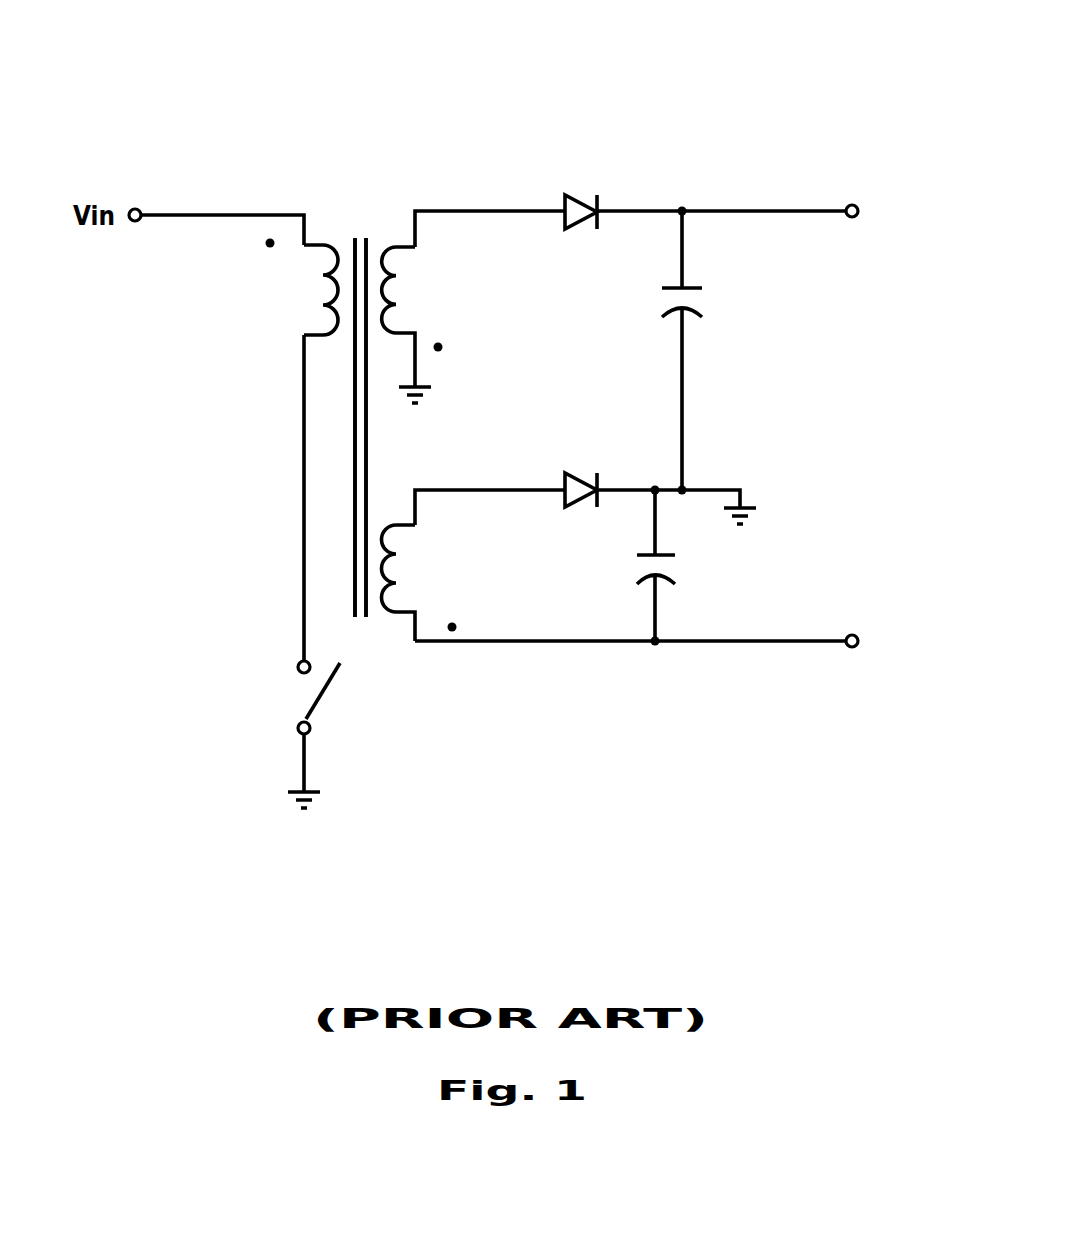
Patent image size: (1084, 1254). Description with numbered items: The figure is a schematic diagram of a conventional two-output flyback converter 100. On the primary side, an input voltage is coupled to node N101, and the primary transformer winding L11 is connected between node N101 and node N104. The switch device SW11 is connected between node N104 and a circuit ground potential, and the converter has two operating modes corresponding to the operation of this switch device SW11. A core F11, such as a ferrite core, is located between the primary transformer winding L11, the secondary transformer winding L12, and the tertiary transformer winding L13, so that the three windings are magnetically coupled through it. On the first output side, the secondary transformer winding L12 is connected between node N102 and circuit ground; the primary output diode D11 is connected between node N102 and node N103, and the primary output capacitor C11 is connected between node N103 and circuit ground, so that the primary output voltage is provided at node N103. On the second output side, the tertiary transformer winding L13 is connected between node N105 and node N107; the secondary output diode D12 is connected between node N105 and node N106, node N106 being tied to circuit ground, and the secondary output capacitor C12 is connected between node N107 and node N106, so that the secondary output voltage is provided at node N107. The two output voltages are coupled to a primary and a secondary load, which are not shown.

The two-output flyback converter 100 is at (785, 69).
The node N101 is at (262, 213).
The primary transformer winding L11 is at (327, 279).
The node N104 is at (300, 477).
The switch device SW11 is at (300, 697).
The core F11 is at (360, 625).
The node N102 is at (504, 211).
The secondary transformer winding L12 is at (395, 277).
The primary output diode D11 is at (585, 196).
The node N103 is at (682, 209).
The primary output capacitor C11 is at (660, 300).
The node N105 is at (507, 490).
The secondary output diode D12 is at (566, 472).
The node N106 is at (670, 478).
The tertiary transformer winding L13 is at (395, 557).
The secondary output capacitor C12 is at (636, 568).
The node N107 is at (655, 650).